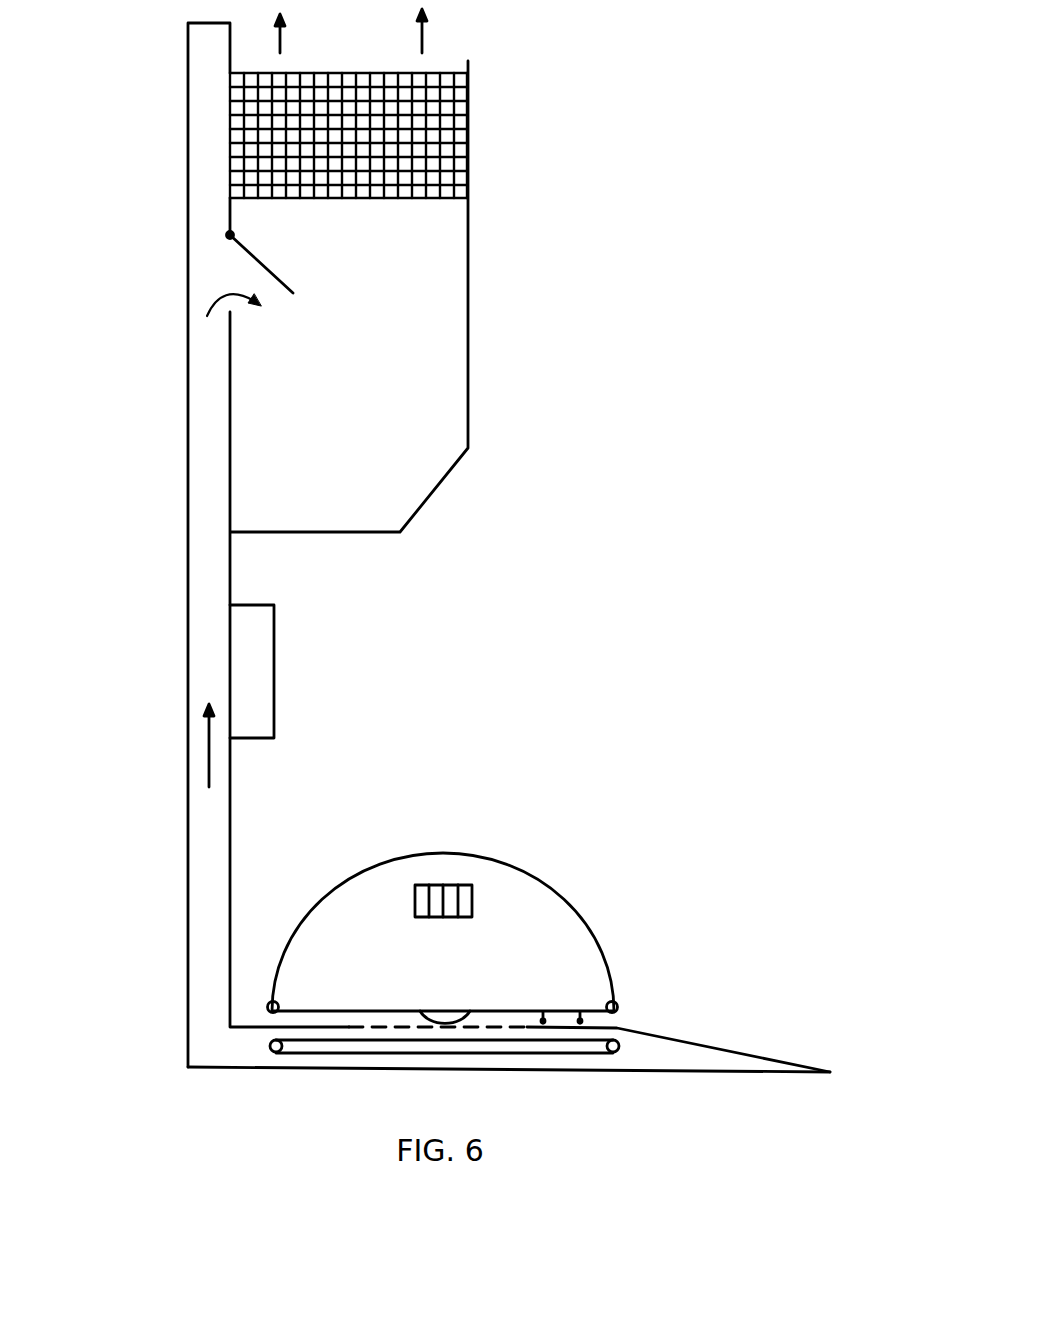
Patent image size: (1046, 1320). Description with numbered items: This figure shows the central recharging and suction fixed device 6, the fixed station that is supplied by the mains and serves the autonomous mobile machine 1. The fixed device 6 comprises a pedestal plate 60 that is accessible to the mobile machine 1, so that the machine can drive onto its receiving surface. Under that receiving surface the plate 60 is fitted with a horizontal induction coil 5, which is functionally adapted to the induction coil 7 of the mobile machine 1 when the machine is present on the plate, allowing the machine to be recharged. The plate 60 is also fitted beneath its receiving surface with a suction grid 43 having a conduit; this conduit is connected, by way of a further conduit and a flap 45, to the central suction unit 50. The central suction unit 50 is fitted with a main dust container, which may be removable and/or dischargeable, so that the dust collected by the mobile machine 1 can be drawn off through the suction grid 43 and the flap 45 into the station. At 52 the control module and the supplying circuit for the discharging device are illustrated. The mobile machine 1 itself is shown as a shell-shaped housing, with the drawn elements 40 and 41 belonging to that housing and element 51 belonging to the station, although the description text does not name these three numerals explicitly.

The mobile machine 1 is at (496, 890).
The horizontal induction coil 5 is at (653, 1047).
The central recharging and suction fixed device 6 is at (170, 630).
The induction coil 7 is at (620, 1007).
The robot body 40 is at (578, 931).
The sensor 41 is at (468, 902).
The suction grid 43 is at (380, 1027).
The flap 45 is at (230, 235).
The central suction unit 50 is at (432, 72).
The dust collecting chamber 51 is at (357, 448).
The control module and supplying circuit 52 is at (248, 705).
The pedestal plate 60 is at (673, 1055).